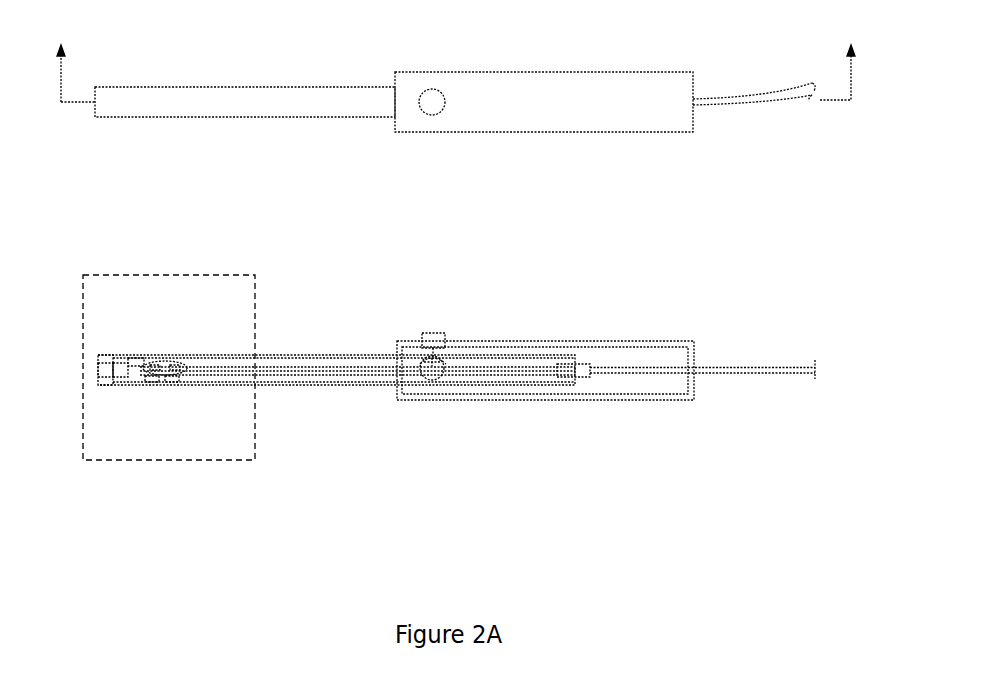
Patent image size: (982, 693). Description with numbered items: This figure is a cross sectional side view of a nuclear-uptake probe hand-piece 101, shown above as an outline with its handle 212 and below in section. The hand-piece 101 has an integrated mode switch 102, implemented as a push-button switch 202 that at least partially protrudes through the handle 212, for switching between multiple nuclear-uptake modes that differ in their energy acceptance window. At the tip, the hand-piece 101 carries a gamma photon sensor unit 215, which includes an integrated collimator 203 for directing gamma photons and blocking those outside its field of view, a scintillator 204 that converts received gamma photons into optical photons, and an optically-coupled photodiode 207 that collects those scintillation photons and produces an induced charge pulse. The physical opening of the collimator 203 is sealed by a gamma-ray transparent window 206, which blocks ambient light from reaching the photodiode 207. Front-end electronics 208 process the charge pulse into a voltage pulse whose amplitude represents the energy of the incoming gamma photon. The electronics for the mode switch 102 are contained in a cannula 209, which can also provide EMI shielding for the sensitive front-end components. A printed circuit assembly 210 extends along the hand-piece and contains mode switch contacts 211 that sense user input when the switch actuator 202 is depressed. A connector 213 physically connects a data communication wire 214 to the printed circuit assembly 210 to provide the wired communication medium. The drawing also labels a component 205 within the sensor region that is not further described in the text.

The nuclear-uptake probe hand-piece 101 is at (442, 72).
The mode switch 102 is at (433, 110).
The push-button switch 202 is at (433, 333).
The integrated collimator 203 is at (108, 353).
The scintillator 204 is at (122, 353).
The lens element 205 is at (143, 363).
The gamma-ray transparent window 206 is at (107, 387).
The optically-coupled photodiode 207 is at (128, 383).
The front-end electronics 208 is at (185, 380).
The cannula 209 is at (262, 353).
The printed circuit assembly 210 is at (288, 373).
The mode switch contacts 211 is at (433, 380).
The handle 212 is at (528, 341).
The connector 213 is at (580, 378).
The data communication wire 214 is at (715, 373).
The gamma photon sensor unit 215 is at (198, 277).